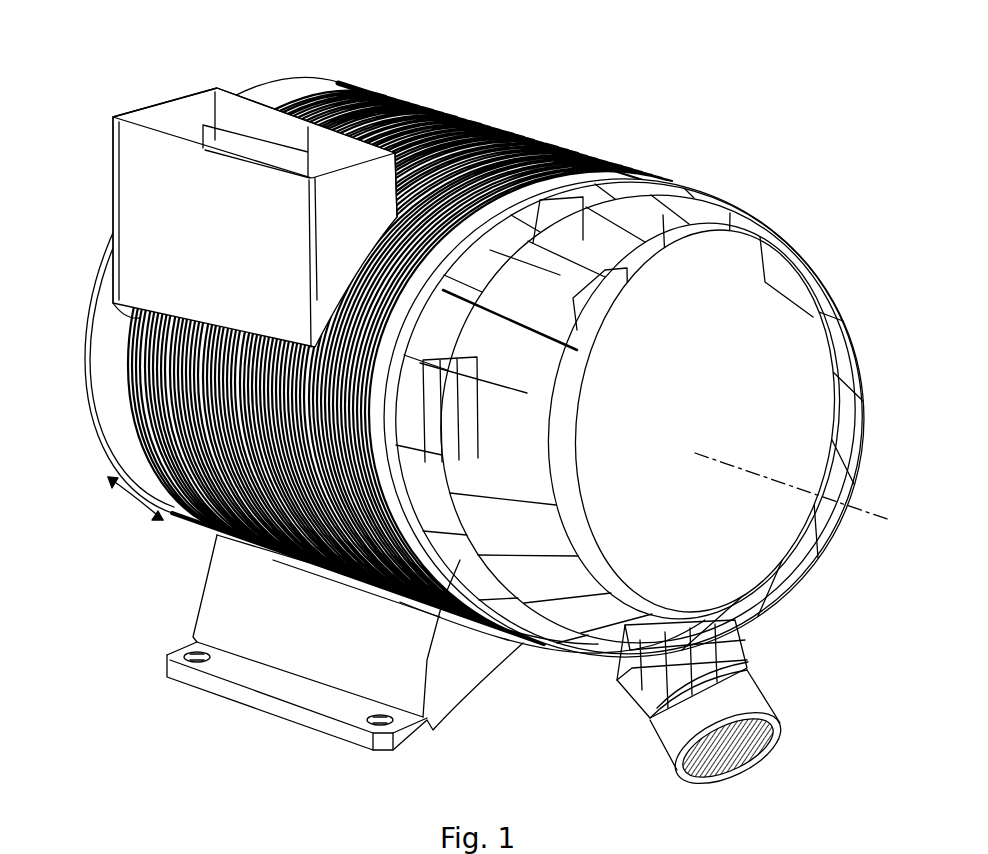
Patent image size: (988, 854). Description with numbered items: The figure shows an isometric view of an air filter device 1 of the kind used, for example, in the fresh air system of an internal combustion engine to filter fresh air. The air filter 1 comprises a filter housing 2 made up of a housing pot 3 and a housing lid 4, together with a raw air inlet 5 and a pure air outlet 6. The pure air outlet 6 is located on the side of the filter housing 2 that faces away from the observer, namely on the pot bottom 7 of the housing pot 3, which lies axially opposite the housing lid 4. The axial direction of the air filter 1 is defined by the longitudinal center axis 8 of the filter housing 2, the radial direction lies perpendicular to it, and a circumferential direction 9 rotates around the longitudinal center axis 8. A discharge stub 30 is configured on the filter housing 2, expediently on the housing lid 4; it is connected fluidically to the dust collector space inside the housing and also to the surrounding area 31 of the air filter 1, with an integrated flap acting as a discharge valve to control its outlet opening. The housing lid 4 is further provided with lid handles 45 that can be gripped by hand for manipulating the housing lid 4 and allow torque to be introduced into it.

The air filter device 1 is at (845, 63).
The filter housing 2 is at (557, 157).
The housing pot 3 is at (480, 127).
The housing lid 4 is at (780, 313).
The raw air inlet 5 is at (187, 117).
The pure air outlet 6 is at (83, 327).
The pot bottom 7 is at (100, 420).
The longitudinal center axis 8 is at (726, 462).
The circumferential direction 9 is at (128, 505).
The discharge stub 30 is at (765, 687).
The surrounding area 31 is at (857, 624).
The lid handles 45 is at (862, 397).